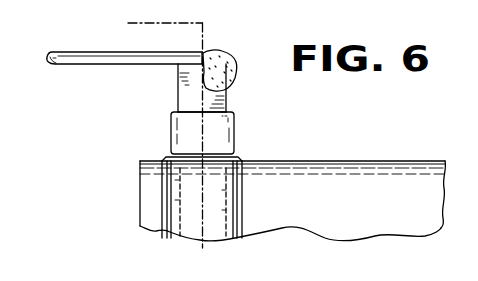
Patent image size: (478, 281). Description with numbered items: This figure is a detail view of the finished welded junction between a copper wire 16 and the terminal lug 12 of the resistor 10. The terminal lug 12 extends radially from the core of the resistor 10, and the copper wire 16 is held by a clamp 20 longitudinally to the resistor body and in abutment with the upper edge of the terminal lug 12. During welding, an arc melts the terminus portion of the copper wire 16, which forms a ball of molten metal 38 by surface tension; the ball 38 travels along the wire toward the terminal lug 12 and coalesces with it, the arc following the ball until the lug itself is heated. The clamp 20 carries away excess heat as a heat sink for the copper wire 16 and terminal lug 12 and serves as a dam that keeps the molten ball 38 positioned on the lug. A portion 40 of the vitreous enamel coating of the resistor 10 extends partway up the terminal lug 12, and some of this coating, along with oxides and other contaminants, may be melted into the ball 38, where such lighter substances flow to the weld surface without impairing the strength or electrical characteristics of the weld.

The resistor 10 is at (150, 200).
The terminal lug 12 is at (178, 89).
The copper wire 16 is at (70, 65).
The clamp 20 is at (204, 32).
The ball of molten metal 38 is at (228, 72).
The portion of the vitreous enamel coating 40 is at (213, 130).